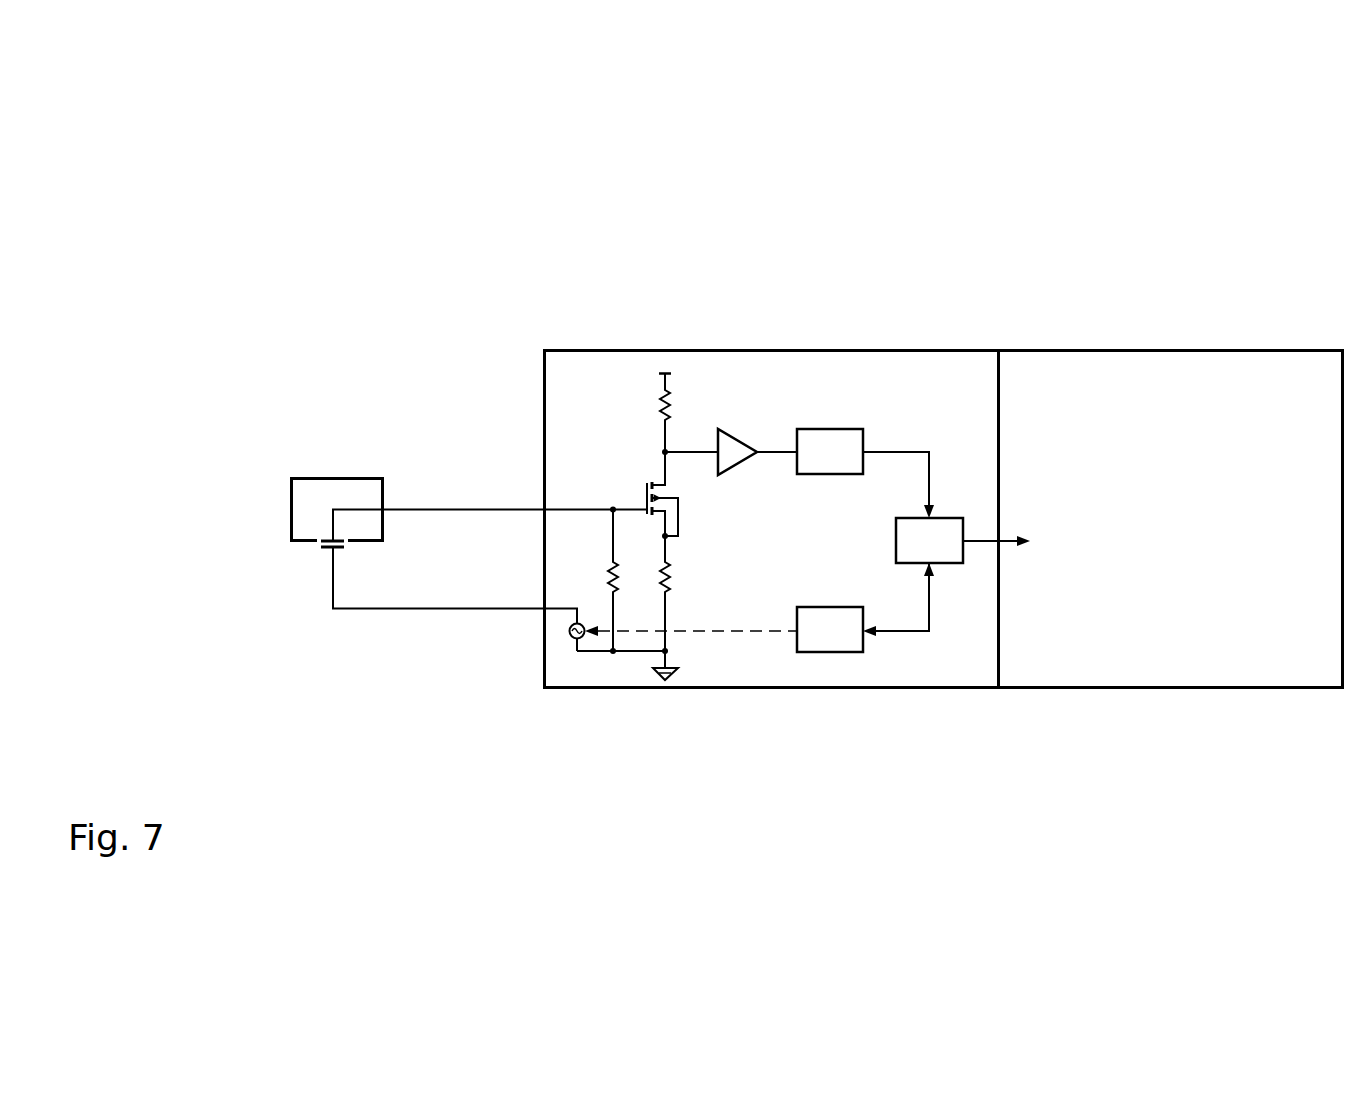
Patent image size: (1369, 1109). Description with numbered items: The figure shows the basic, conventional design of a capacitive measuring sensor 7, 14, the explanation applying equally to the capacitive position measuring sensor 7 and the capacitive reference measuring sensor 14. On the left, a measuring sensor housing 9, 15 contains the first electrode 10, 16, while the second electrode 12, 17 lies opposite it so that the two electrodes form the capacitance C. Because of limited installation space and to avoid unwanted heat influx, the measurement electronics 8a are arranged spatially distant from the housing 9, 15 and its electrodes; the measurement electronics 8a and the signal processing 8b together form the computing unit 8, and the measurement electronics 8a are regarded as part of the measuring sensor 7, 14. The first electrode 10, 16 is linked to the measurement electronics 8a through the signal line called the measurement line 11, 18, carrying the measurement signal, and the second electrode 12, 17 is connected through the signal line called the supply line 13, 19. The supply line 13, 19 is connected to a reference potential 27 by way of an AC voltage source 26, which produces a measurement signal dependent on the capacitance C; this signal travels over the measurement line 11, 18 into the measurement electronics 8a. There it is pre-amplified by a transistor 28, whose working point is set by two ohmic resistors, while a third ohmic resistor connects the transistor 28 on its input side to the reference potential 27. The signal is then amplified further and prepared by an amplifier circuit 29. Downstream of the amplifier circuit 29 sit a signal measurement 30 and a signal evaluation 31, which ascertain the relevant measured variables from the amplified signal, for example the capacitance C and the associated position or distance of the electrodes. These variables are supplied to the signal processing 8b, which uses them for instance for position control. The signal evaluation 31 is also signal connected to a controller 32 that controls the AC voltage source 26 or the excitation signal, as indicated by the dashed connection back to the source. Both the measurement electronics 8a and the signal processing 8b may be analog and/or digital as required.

The capacitive position measuring sensor 7 is at (238, 480).
The capacitive reference measuring sensor 14 is at (413, 366).
The measuring sensor housing 9 is at (298, 422).
The measuring sensor housing 15 is at (371, 477).
The first electrode 10 is at (235, 457).
The first electrode 16 is at (326, 538).
The measurement line 11 is at (438, 457).
The measurement line 18 is at (450, 508).
The second electrode 12 is at (327, 549).
The second electrode 17 is at (303, 638).
The supply line 13 is at (361, 610).
The supply line 19 is at (438, 638).
The computing unit 8 is at (991, 290).
The measurement electronics 8a is at (680, 358).
The signal processing 8b is at (1170, 358).
The AC voltage source 26 is at (571, 637).
The reference potential 27 is at (667, 680).
The transistor 28 is at (640, 484).
The amplifier circuit 29 is at (733, 440).
The signal measurement 30 is at (829, 435).
The signal evaluation 31 is at (941, 560).
The controller 32 is at (831, 652).